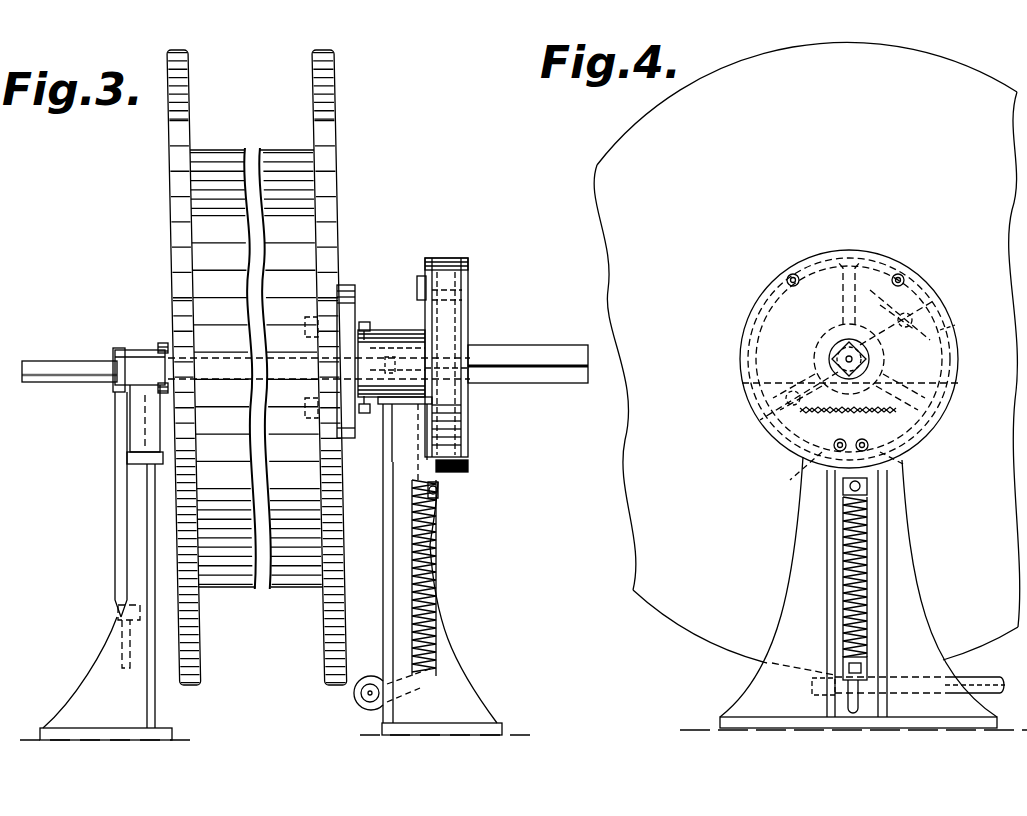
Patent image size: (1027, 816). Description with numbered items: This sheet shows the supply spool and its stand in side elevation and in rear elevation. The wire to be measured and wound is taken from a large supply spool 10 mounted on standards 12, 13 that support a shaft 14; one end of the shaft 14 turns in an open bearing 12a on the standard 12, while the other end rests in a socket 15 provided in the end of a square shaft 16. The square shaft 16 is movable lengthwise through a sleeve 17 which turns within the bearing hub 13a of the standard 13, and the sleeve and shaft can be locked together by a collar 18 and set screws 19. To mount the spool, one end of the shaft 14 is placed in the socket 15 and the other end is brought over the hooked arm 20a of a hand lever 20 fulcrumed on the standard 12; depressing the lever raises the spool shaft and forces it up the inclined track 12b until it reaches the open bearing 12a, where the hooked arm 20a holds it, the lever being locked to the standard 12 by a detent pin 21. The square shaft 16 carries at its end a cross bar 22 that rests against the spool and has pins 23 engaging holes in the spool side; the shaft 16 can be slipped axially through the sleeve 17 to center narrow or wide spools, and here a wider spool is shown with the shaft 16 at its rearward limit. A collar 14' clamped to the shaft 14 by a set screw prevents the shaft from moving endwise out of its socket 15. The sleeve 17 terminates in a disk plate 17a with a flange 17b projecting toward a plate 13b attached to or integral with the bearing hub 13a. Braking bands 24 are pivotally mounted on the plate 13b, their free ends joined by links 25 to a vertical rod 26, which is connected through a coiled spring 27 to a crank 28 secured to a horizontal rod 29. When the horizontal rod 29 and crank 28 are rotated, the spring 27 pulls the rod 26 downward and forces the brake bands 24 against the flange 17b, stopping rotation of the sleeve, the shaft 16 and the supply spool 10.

In FIG. 3, the supply spool 10 is at (334, 132).
In FIG. 4, the supply spool 10 is at (930, 68).
In FIG. 3, the standard 12 is at (100, 665).
In FIG. 3, the open bearing 12a is at (135, 350).
In FIG. 3, the inclined track 12b is at (135, 437).
In FIG. 3, the standard 13 is at (458, 652).
In FIG. 4, the standard 13 is at (775, 680).
In FIG. 3, the bearing hub 13a is at (409, 408).
In FIG. 3, the plate 13b is at (420, 278).
In FIG. 3, the shaft 14 is at (246, 378).
In FIG. 3, the collar 14' is at (158, 347).
In FIG. 3, the socket 15 is at (390, 330).
In FIG. 3, the square shaft 16 is at (525, 352).
In FIG. 3, the sleeve 17 is at (467, 328).
In FIG. 3, the disk plate 17a is at (468, 300).
In FIG. 4, the disk plate 17a is at (758, 352).
In FIG. 3, the flange 17b is at (445, 260).
In FIG. 3, the collar 18 is at (388, 357).
In FIG. 3, the set screws 19 is at (363, 322).
In FIG. 3, the hand lever 20 is at (116, 492).
In FIG. 3, the hooked arm 20a is at (115, 352).
In FIG. 3, the detent pin 21 is at (116, 620).
In FIG. 3, the cross bar 22 is at (347, 287).
In FIG. 4, the cross bar 22 is at (960, 334).
In FIG. 3, the pins 23 is at (325, 300).
In FIG. 4, the pins 23 is at (945, 298).
In FIG. 4, the braking bands 24 is at (960, 380).
In FIG. 4, the links 25 is at (790, 482).
In FIG. 3, the vertical rod 26 is at (440, 486).
In FIG. 4, the vertical rod 26 is at (868, 488).
In FIG. 3, the coiled spring 27 is at (438, 548).
In FIG. 4, the coiled spring 27 is at (870, 552).
In FIG. 3, the crank 28 is at (395, 695).
In FIG. 4, the crank 28 is at (858, 712).
In FIG. 3, the horizontal rod 29 is at (361, 693).
In FIG. 4, the horizontal rod 29 is at (965, 676).